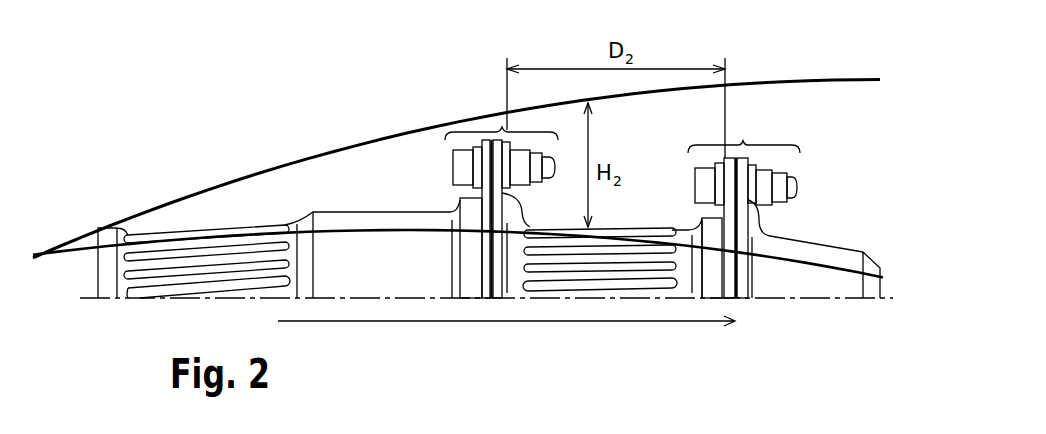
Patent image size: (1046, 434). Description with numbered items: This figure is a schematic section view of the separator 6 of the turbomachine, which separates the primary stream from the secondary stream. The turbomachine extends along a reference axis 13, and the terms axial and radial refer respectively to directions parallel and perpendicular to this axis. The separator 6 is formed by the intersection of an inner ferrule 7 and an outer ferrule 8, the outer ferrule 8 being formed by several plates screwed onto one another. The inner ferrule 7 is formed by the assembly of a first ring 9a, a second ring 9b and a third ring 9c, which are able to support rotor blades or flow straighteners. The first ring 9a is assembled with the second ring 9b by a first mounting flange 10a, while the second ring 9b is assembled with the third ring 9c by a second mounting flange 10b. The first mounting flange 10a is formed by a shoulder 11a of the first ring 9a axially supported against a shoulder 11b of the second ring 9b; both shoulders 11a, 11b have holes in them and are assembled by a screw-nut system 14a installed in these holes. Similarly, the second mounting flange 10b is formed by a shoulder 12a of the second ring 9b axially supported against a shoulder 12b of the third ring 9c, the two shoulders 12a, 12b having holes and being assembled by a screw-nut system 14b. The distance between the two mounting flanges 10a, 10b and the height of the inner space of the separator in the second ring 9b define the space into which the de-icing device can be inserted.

The separator 6 is at (157, 221).
The inner ferrule 7 is at (810, 262).
The outer ferrule 8 is at (823, 78).
The first ring 9a is at (253, 225).
The second ring 9b is at (617, 227).
The third ring 9c is at (827, 278).
The first mounting flange 10a is at (502, 127).
The second mounting flange 10b is at (743, 140).
The shoulder of first ring 11a is at (467, 200).
The shoulder of second ring 11b is at (504, 195).
The shoulder of second ring 12a is at (703, 212).
The shoulder of third ring 12b is at (753, 215).
The reference axis 13 is at (577, 322).
The screw-nut system 14a is at (452, 160).
The screw-nut system 14b is at (790, 172).